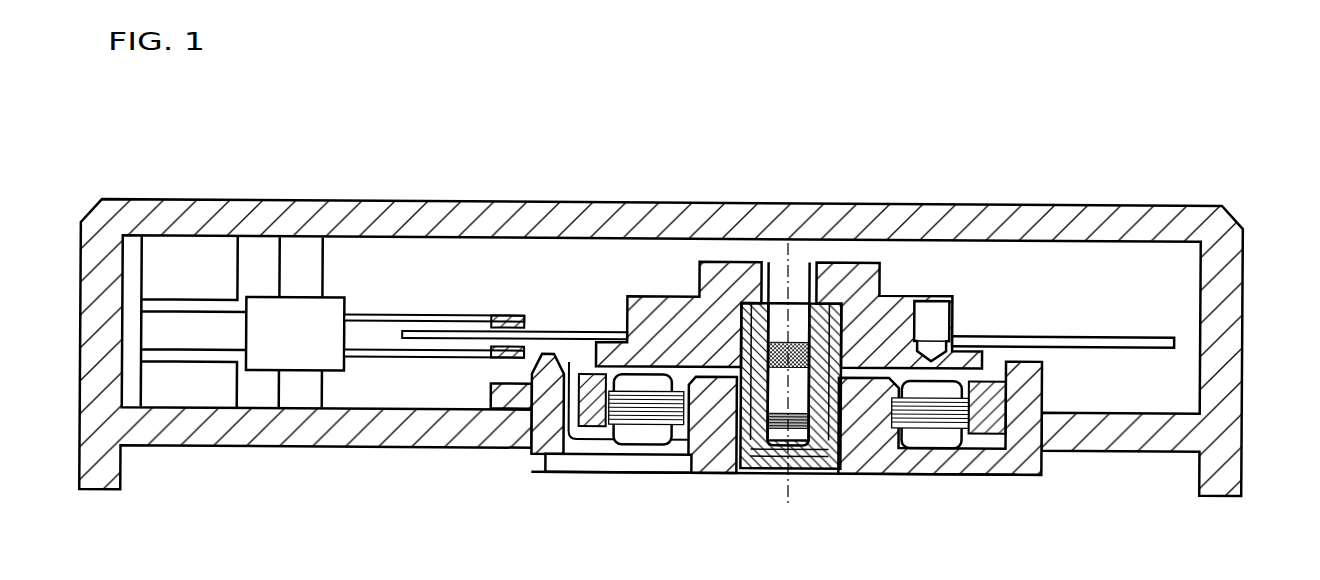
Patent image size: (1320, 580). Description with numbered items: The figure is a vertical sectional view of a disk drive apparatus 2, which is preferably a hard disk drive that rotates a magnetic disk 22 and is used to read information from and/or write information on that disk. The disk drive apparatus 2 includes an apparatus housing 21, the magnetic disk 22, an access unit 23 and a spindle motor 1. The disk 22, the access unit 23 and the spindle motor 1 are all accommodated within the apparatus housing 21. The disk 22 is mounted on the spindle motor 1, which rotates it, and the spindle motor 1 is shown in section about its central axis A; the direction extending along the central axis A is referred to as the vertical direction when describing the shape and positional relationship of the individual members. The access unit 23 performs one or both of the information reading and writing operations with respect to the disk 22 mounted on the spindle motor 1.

The spindle motor 1 is at (948, 478).
The disk drive apparatus 2 is at (240, 134).
The apparatus housing 21 is at (1229, 320).
The magnetic disk 22 is at (1089, 339).
The access unit 23 is at (413, 356).
The central axis A is at (788, 493).